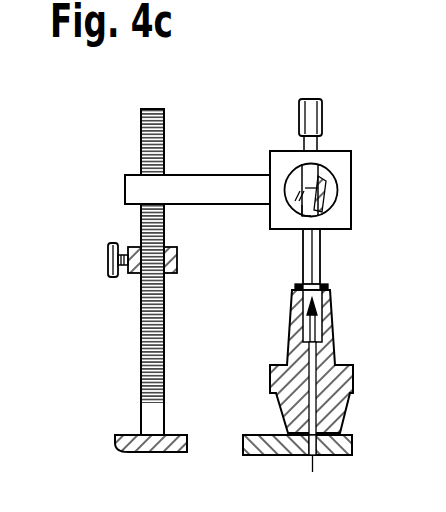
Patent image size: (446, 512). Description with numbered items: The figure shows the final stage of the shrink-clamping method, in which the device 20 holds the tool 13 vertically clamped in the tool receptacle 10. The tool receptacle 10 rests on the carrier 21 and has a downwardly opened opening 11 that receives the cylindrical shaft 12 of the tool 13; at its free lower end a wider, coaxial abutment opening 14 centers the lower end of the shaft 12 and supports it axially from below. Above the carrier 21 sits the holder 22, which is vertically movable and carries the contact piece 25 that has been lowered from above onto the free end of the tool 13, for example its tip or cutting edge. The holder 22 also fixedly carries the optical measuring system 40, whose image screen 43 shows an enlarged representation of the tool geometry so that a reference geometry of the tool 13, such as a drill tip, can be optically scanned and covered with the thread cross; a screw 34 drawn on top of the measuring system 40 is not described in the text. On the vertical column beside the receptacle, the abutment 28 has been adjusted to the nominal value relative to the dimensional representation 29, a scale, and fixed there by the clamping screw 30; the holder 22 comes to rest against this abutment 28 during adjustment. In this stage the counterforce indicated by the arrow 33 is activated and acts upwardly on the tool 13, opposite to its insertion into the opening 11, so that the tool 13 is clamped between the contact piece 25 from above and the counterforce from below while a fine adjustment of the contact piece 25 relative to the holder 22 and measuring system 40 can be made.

The tool receptacle 10 is at (323, 353).
The opening 11 is at (305, 328).
The cylindrical shaft 12 is at (311, 263).
The tool 13 is at (302, 208).
The abutment opening 14 is at (295, 290).
The device 20 is at (247, 85).
The carrier 21 is at (263, 442).
The holder 22 is at (208, 187).
The contact piece 25 is at (313, 187).
The abutment 28 is at (177, 262).
The dimensional representation 29 is at (152, 398).
The clamping screw 30 is at (110, 262).
The arrow 33 is at (315, 320).
The clamping screw 34 is at (313, 117).
The optical measuring system 40 is at (341, 218).
The image screen 43 is at (325, 193).